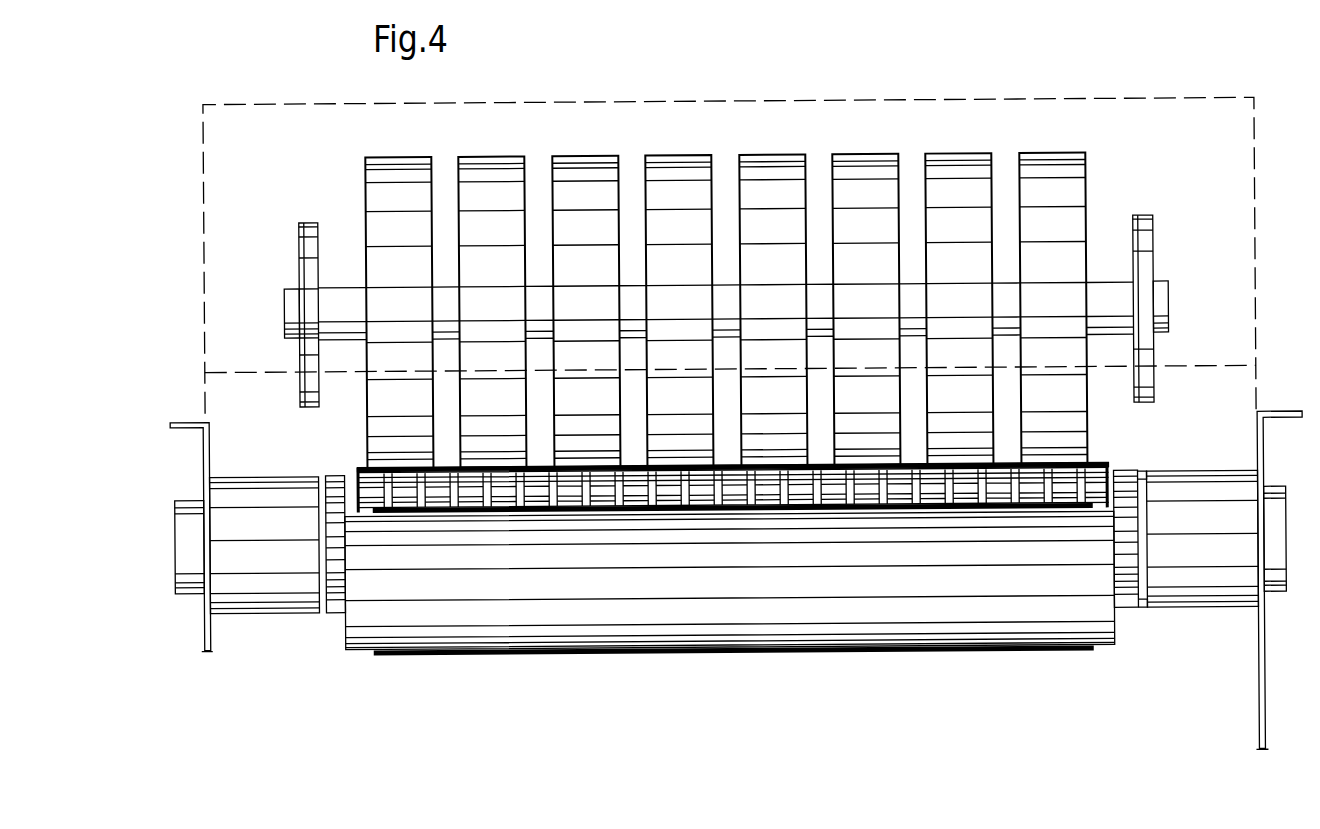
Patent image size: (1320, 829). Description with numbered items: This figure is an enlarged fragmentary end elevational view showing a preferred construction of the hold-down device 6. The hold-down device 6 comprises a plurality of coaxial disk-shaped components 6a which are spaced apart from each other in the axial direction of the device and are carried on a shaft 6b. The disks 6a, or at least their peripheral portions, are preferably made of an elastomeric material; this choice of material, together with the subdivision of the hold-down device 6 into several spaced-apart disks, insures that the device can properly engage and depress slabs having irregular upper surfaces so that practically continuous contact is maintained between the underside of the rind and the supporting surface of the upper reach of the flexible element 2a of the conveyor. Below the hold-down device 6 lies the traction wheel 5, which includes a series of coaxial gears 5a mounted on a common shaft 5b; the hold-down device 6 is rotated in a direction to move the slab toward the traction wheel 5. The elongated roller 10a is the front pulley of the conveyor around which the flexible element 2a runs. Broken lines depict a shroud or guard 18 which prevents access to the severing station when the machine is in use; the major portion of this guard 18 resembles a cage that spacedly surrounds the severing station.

The flexible element 2a is at (497, 514).
The traction wheel 5 is at (355, 465).
The coaxial gears 5a is at (640, 490).
The common shaft 5b is at (186, 597).
The hold-down device 6 is at (1133, 177).
The disk-shaped components 6a is at (396, 178).
The shaft 6b is at (334, 298).
The front pulley 10a is at (348, 622).
The guard 18 is at (209, 335).